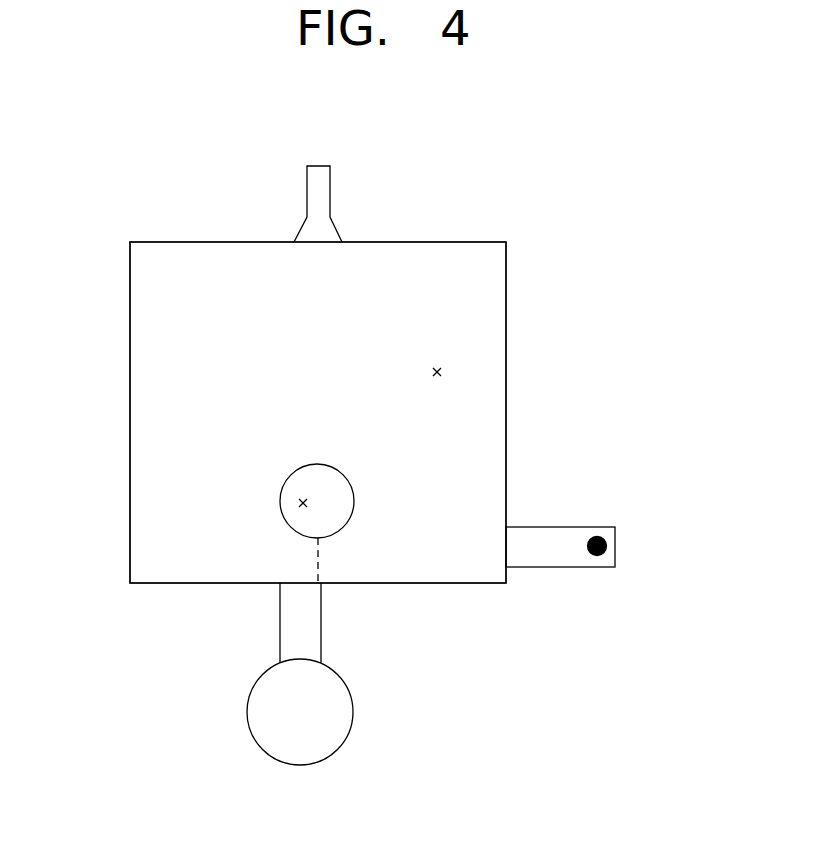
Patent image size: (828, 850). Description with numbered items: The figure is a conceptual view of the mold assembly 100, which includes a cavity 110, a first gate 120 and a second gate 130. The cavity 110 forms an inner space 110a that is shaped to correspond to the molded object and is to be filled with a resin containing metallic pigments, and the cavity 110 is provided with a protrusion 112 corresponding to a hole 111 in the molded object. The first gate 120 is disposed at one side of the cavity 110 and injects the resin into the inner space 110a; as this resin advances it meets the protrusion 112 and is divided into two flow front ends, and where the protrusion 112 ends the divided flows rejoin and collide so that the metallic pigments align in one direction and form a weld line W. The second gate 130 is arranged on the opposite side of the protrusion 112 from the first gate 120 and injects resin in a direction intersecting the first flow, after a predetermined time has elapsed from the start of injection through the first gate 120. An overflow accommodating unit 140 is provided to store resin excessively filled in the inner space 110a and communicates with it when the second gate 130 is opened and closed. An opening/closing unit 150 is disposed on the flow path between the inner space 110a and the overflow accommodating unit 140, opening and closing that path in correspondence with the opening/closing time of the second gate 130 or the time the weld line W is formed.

The mold assembly 100 is at (538, 213).
The cavity 110 is at (498, 307).
The inner space 110a is at (445, 373).
The hole 111 is at (299, 503).
The protrusion 112 is at (282, 477).
The first gate 120 is at (325, 188).
The second gate 130 is at (606, 546).
The overflow accommodating unit 140 is at (346, 708).
The opening/closing unit 150 is at (316, 629).
The weld line W is at (318, 565).